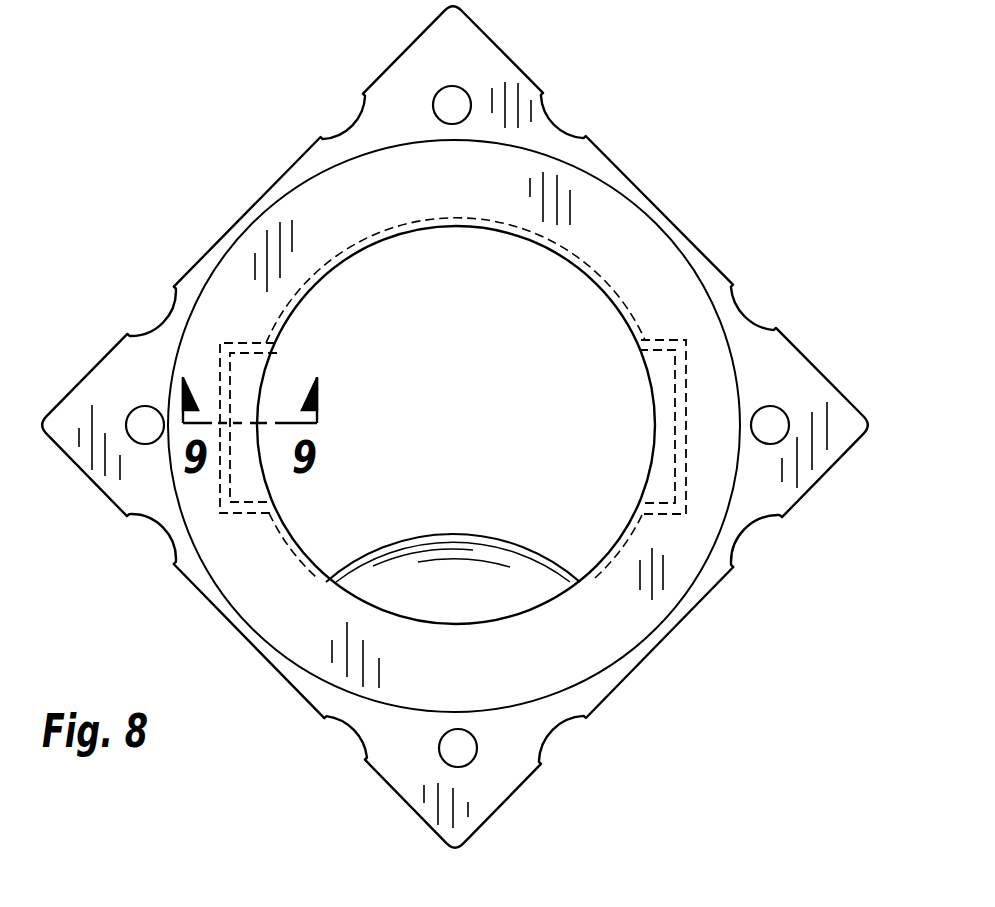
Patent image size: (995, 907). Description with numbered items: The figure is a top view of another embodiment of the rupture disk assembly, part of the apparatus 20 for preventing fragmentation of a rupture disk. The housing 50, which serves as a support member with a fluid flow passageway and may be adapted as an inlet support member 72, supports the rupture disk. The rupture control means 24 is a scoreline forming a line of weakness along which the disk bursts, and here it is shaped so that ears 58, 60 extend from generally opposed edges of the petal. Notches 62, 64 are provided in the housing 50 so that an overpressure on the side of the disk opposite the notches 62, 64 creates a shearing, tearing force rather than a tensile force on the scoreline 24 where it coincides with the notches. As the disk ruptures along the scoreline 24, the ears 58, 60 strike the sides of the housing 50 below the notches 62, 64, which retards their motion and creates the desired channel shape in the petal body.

The apparatus for preventing fragmentation of a rupture disk 20 is at (707, 214).
The rupture control means 24 is at (497, 228).
The housing 50 is at (820, 382).
The inlet support member 72 is at (762, 352).
The ear 58 is at (255, 368).
The ear 60 is at (655, 385).
The notch 62 is at (229, 343).
The notch 64 is at (673, 338).